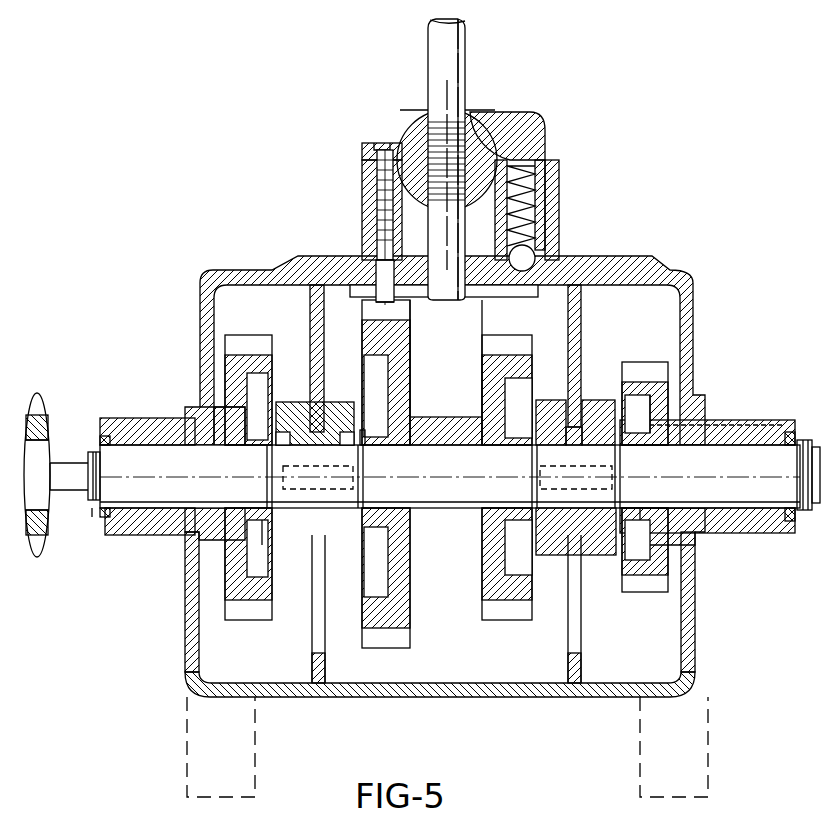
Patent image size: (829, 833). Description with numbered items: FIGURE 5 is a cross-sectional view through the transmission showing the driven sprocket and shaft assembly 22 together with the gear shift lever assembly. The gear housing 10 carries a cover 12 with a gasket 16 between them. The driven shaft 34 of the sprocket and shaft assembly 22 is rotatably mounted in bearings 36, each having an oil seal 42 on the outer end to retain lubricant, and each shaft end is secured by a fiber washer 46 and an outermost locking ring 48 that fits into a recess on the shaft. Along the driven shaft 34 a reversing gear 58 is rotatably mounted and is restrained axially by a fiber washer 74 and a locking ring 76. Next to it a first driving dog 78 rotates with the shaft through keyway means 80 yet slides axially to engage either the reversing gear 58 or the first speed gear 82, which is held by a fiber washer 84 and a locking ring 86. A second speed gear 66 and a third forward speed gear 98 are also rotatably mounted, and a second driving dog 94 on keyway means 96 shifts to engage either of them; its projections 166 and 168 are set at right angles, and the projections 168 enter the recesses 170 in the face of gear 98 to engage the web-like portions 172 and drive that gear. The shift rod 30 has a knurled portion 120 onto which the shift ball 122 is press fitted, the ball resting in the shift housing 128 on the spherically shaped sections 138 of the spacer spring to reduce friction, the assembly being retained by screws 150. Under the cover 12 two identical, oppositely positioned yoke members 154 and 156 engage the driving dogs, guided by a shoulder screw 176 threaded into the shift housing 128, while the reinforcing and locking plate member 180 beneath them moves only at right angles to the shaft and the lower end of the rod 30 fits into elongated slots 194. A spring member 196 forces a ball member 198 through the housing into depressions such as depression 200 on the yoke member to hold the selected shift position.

The gear housing 10 is at (697, 646).
The cover 12 is at (683, 280).
The gasket 16 is at (170, 425).
The driven sprocket and shaft assembly 22 is at (48, 408).
The shift rod 30 is at (467, 50).
The driven shaft 34 is at (72, 450).
The bearings 36 is at (132, 430).
The oil seal 42 is at (790, 430).
The fiber washer 46 is at (90, 517).
The locking ring 48 is at (95, 517).
The reversing gear 58 is at (250, 334).
The second speed gear 66 is at (522, 340).
The fiber washer 74 is at (268, 580).
The locking ring 76 is at (263, 540).
The first driving dog 78 is at (297, 380).
The keyway means 80 is at (360, 468).
The first speed gear 82 is at (411, 310).
The fiber washer 84 is at (364, 556).
The locking ring 86 is at (363, 428).
The second driving dog 94 is at (604, 387).
The keyway means 96 is at (612, 468).
The third forward speed gear 98 is at (646, 361).
The knurled portion 120 is at (445, 125).
The shift ball 122 is at (485, 132).
The shift housing 128 is at (360, 205).
The sections 138 is at (498, 180).
The screws 150 is at (376, 142).
The yoke member 154 is at (312, 312).
The yoke member 156 is at (583, 340).
The projections 166 is at (540, 400).
The projections 168 is at (613, 555).
The recesses 170 is at (643, 553).
The web-like portion 172 is at (650, 405).
The shoulder screw 176 is at (372, 245).
The reinforcing and locking plate member 180 is at (513, 290).
The elongated slots 194 is at (446, 372).
The spring member 196 is at (534, 198).
The ball member 198 is at (533, 253).
The depression 200 is at (562, 262).